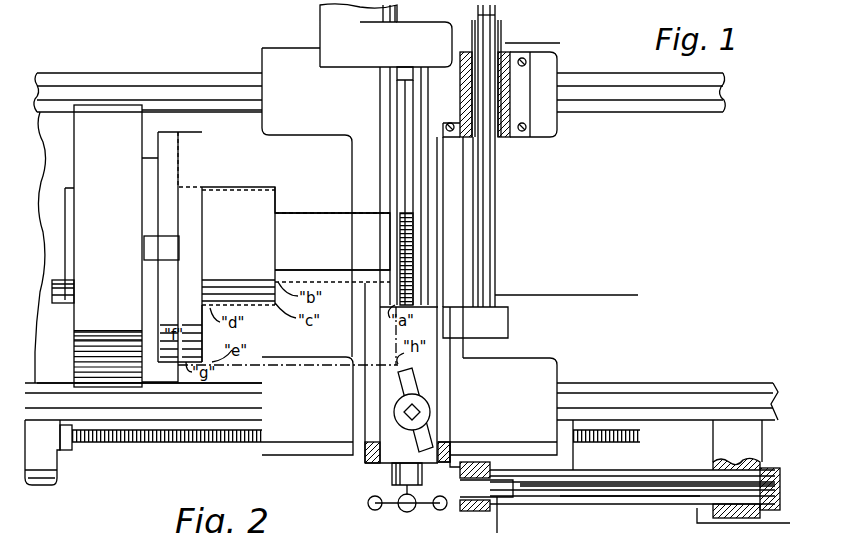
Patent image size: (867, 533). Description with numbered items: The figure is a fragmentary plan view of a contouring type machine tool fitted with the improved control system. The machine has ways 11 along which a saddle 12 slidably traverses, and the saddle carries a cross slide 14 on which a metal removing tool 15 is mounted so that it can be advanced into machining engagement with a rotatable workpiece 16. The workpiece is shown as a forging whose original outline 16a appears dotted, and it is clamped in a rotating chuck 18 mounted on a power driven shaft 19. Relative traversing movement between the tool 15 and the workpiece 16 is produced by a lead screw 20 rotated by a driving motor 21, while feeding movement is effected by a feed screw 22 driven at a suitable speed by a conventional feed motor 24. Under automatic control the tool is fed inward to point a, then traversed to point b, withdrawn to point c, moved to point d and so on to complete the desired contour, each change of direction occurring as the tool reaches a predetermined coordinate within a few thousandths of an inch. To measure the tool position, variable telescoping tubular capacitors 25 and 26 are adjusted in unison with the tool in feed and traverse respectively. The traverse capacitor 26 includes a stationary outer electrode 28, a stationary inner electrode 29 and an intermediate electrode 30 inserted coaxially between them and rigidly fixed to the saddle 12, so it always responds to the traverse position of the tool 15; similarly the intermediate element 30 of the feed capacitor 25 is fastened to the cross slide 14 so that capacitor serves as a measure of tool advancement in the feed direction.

The ways 11 is at (662, 112).
The saddle 12 is at (540, 368).
The cross slide 14 is at (447, 383).
The metal removing tool 15 is at (400, 372).
The rotatable workpiece 16 is at (307, 228).
The original outline 16a is at (250, 190).
The rotating chuck 18 is at (73, 146).
The power driven shaft 19 is at (58, 215).
The lead screw 20 is at (218, 444).
The driving motor 21 is at (57, 468).
The feed screw 22 is at (405, 137).
The feed motor 24 is at (320, 20).
The feed capacitor 25 is at (518, 35).
The traverse capacitor 26 is at (666, 456).
The stationary outer electrode 28 is at (625, 495).
The stationary inner electrode 29 is at (605, 500).
The intermediate electrode 30 is at (495, 234).